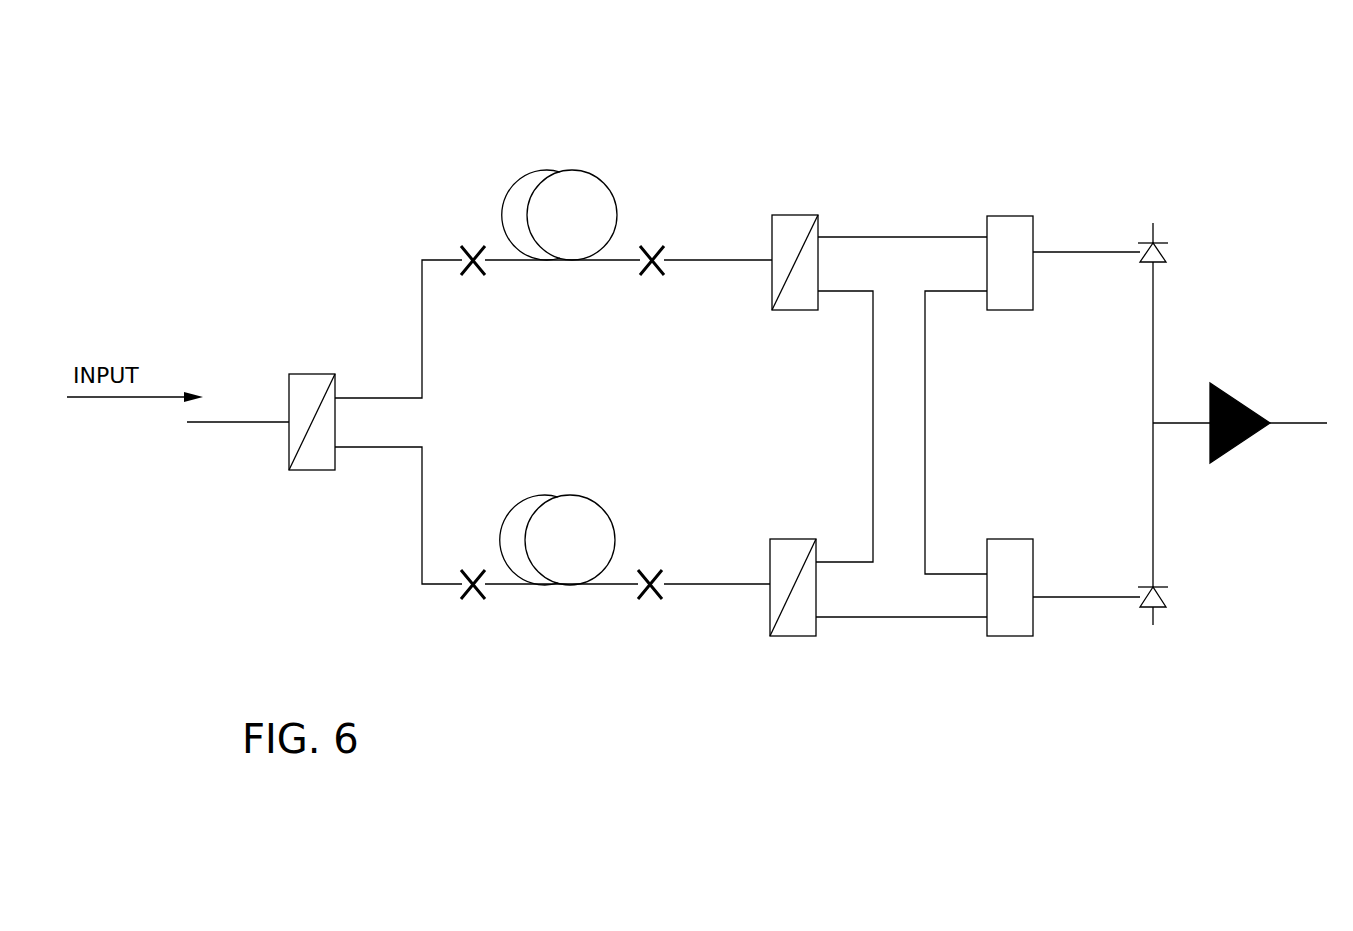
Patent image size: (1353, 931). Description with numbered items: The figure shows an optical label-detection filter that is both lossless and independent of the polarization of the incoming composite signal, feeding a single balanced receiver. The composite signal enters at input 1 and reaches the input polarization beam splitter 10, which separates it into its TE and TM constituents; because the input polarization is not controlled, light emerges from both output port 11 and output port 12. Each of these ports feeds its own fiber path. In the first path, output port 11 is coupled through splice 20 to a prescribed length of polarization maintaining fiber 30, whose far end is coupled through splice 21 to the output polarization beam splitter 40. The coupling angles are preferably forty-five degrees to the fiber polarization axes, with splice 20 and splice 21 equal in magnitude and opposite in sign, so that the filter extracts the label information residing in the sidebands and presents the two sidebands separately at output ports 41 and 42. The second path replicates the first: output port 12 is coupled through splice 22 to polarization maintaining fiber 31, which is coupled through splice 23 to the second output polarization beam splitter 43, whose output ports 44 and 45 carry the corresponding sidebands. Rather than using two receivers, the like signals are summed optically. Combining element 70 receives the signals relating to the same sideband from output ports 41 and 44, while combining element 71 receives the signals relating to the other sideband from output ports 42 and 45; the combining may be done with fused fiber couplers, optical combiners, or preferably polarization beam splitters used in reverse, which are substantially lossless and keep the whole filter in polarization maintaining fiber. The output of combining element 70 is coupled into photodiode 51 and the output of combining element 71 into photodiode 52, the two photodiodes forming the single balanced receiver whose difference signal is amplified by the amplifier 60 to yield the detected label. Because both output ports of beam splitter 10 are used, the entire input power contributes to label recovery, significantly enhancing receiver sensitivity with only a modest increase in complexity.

The input 1 is at (187, 422).
The input polarization beam splitter 10 is at (313, 373).
The output port 11 is at (380, 397).
The output port 12 is at (385, 447).
The splice 20 is at (473, 246).
The splice 21 is at (657, 246).
The splice 22 is at (473, 598).
The splice 23 is at (650, 598).
The polarization maintaining fiber 30 is at (590, 172).
The polarization maintaining fiber 31 is at (585, 497).
The output polarization beam splitter 40 is at (795, 215).
The output port 41 is at (837, 237).
The output port 42 is at (837, 291).
The second output polarization beam splitter 43 is at (793, 636).
The output port 44 is at (925, 455).
The output port 45 is at (835, 617).
The photodiode 51 is at (1162, 248).
The photodiode 52 is at (1162, 597).
The balanced receiver amplifier 60 is at (1227, 395).
The combining element 70 is at (1010, 216).
The combining element 71 is at (1008, 636).